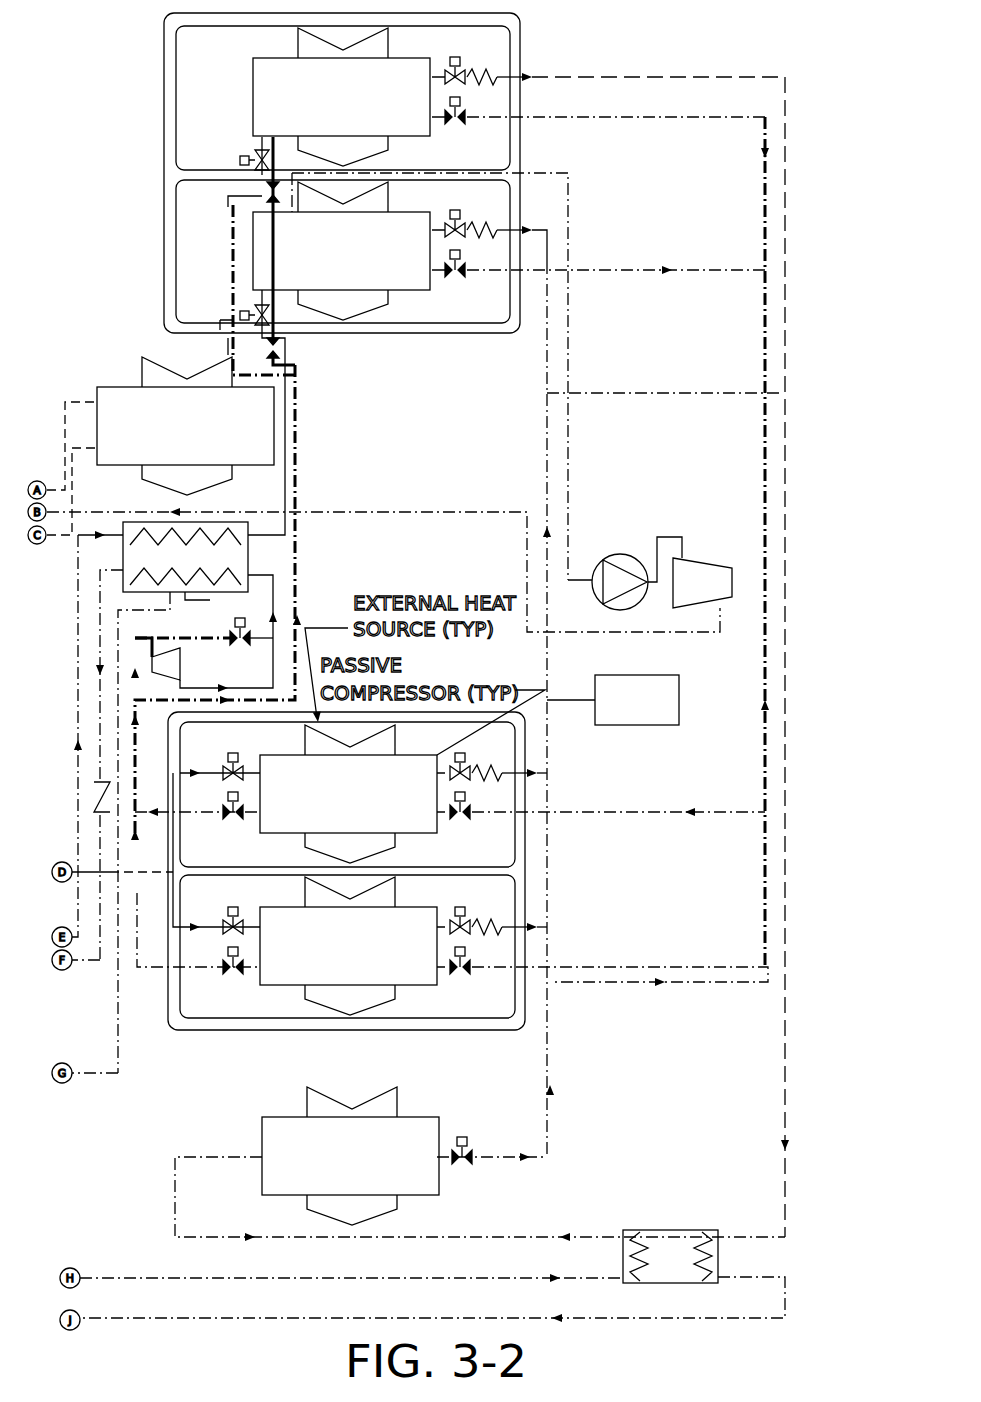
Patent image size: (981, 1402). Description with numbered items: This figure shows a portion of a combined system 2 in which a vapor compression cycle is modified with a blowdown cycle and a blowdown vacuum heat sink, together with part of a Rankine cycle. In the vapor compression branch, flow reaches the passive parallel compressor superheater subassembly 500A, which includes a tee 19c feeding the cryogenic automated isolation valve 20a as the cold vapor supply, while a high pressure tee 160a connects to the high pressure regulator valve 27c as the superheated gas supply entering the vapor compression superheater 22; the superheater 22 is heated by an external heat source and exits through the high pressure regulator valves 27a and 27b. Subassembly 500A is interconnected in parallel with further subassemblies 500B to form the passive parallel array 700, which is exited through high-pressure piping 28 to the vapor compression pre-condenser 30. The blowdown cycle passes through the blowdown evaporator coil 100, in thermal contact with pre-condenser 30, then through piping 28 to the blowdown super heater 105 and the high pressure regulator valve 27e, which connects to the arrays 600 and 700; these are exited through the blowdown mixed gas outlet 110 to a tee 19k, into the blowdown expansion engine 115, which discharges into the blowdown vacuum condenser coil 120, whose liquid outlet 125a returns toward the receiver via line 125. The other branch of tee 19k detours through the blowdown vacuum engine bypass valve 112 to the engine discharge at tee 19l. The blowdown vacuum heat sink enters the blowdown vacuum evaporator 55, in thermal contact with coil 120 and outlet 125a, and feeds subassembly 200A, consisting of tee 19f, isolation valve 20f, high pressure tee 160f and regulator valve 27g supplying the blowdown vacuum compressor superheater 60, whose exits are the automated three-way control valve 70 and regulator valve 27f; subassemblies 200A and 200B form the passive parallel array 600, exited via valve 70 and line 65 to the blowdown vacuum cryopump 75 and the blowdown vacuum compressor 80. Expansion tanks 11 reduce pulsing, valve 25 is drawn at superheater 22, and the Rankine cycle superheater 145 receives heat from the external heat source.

The system 2 is at (88, 862).
The expansion tank 11 is at (679, 690).
The tee 19c is at (150, 818).
The tee 19f is at (252, 372).
The tee 19k is at (185, 652).
The tee 19l is at (276, 612).
The cryogenic automated isolation valve 20a is at (236, 908).
The cryogenic automated isolation valve 20f is at (222, 345).
The vapor compression superheater 22 is at (410, 990).
The valve 25 is at (418, 918).
The high pressure regulator valve 27a is at (466, 910).
The high pressure regulator valve 27b is at (238, 978).
The high pressure regulator valve 27c is at (470, 972).
The high pressure regulator valve 27e is at (462, 1168).
The high pressure regulator valve 27f is at (462, 212).
The high pressure regulator valve 27g is at (466, 275).
The high-pressure piping and appurtenances 28 is at (785, 445).
The vapor compression pre-condenser 30 is at (718, 1237).
The blowdown vacuum evaporator 55 is at (228, 540).
The blowdown vacuum compressor superheater 60 is at (341, 238).
The fluid line 65 is at (547, 232).
The automated 3 way blowdown vacuum control valve 70 is at (280, 348).
The blowdown vacuum cryopump 75 is at (620, 610).
The blowdown vacuum compressor 80 is at (732, 575).
The blowdown evaporator coil 100 is at (630, 1283).
The blowdown super heater 105 is at (437, 1117).
The blowdown mixed gas outlet 110 is at (262, 290).
The blowdown vacuum engine bypass valve 112 is at (240, 648).
The blowdown expansion engine 115 is at (204, 630).
The blowdown vacuum condenser coil 120 is at (123, 570).
The fluid line 125 is at (183, 520).
The liquid outlet 125a is at (190, 620).
The Rankine cycle superheater 145 is at (97, 387).
The high pressure tee 160a is at (768, 965).
The high pressure tee 160f is at (765, 272).
The passive parallel compressor superheater subassembly 200A is at (510, 320).
The blowdown vacuum parallel compressor superheater subassembly 200B is at (512, 42).
The passive parallel compressor superheater subassembly 500A is at (530, 1005).
The parallel compressor superheater subassembly 500B is at (513, 763).
The passive parallel array 600 is at (515, 175).
The passive parallel array 700 is at (525, 848).